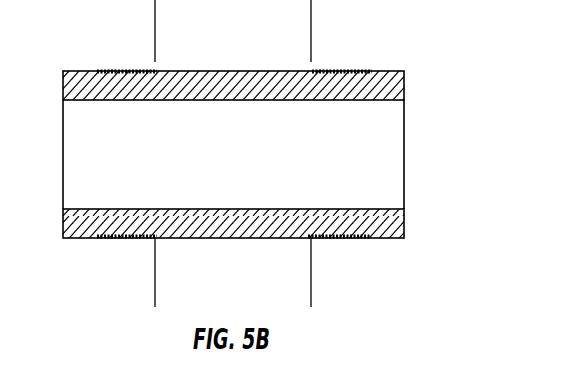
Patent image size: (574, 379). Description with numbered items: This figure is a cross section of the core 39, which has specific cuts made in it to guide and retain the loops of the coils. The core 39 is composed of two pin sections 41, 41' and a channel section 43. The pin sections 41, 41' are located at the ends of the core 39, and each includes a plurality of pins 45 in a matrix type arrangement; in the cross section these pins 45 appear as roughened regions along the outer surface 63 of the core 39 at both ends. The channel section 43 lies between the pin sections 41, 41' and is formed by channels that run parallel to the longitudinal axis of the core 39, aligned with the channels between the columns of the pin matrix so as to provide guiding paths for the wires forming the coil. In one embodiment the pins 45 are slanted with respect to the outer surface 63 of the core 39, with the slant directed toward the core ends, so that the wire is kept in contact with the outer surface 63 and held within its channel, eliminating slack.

The core 39 is at (404, 84).
The pins 45 is at (338, 71).
The outer surface 63 is at (118, 71).
The pin section 41 is at (356, 263).
The pin section 41' is at (110, 261).
The channel section 43 is at (309, 241).